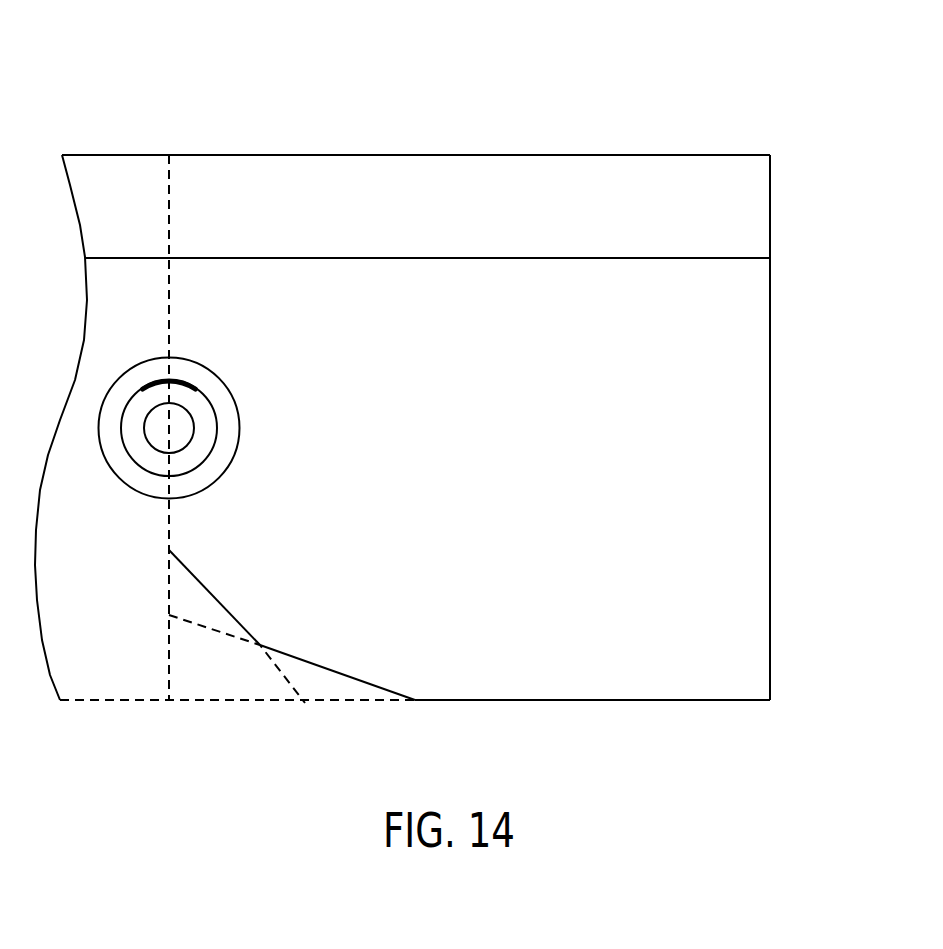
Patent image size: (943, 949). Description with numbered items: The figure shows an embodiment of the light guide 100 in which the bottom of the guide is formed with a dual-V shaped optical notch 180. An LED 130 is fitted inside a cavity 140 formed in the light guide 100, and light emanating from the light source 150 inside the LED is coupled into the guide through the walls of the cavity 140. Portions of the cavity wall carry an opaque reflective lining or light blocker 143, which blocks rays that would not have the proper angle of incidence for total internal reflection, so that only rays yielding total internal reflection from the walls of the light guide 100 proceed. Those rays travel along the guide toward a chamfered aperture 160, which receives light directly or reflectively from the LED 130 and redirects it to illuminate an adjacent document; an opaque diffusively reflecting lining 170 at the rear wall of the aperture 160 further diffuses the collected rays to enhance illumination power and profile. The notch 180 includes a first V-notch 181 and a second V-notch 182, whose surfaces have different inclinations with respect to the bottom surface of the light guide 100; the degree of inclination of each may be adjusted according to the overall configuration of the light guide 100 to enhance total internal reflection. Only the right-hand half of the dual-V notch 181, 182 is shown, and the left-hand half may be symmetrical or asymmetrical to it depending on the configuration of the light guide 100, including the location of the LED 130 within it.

The light guide 100 is at (585, 90).
The LED 130 is at (207, 438).
The cavity 140 is at (207, 475).
The light blocker 143 is at (190, 382).
The light source 150 is at (183, 415).
The chamfered aperture 160 is at (647, 170).
The diffusively reflecting lining 170 is at (770, 222).
The notch 180 is at (316, 622).
The first V-notch 181 is at (228, 611).
The second V-notch 182 is at (372, 685).